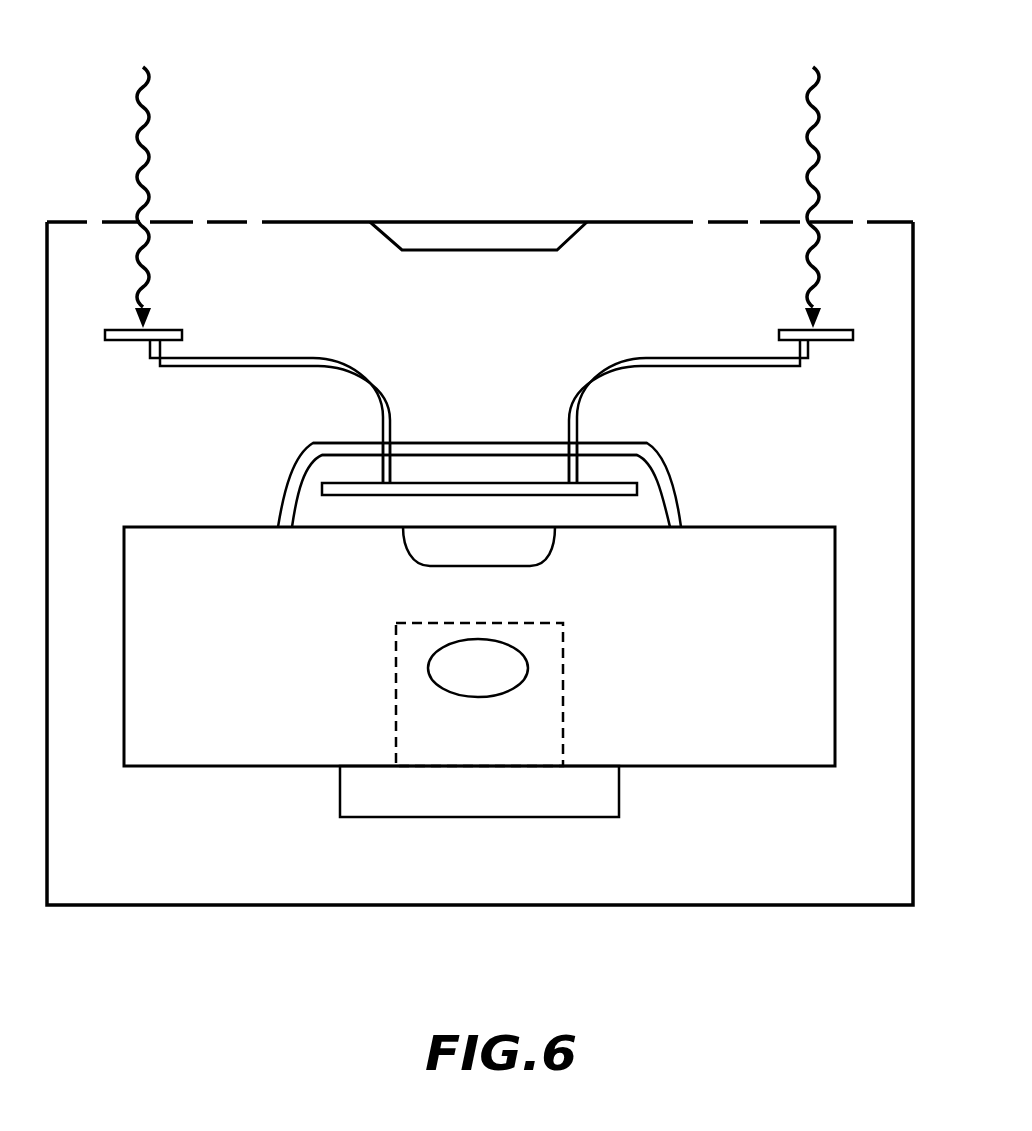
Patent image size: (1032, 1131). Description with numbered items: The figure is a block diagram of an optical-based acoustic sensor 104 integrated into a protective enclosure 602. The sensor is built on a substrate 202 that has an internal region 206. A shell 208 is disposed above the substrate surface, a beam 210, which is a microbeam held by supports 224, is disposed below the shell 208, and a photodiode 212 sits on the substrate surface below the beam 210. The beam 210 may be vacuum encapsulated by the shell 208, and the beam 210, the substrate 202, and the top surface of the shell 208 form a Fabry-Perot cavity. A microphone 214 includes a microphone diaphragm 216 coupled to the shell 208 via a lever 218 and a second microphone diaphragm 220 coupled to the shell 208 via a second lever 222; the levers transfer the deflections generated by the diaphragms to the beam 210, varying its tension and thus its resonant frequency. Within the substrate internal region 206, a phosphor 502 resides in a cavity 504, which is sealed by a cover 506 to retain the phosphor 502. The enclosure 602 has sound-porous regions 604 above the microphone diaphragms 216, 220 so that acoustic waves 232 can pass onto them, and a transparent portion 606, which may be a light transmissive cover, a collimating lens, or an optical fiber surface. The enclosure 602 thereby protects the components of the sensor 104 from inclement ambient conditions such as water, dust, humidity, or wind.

The optical-based acoustic sensor 104 is at (360, 74).
The substrate 202 is at (233, 767).
The internal region 206 is at (712, 636).
The shell 208 is at (284, 485).
The beam 210 is at (360, 495).
The photodiode 212 is at (405, 546).
The microphone 214 is at (760, 285).
The microphone diaphragm 216 is at (110, 330).
The lever 218 is at (228, 367).
The second microphone diaphragm 220 is at (847, 331).
The second lever 222 is at (732, 367).
The supports 224 is at (383, 466).
The acoustic waves 232 is at (148, 176).
The phosphor 502 is at (478, 698).
The cavity 504 is at (563, 695).
The cover 506 is at (478, 818).
The enclosure 602 is at (158, 905).
The sound-porous regions 604 is at (108, 180).
The transparent portion 606 is at (390, 222).